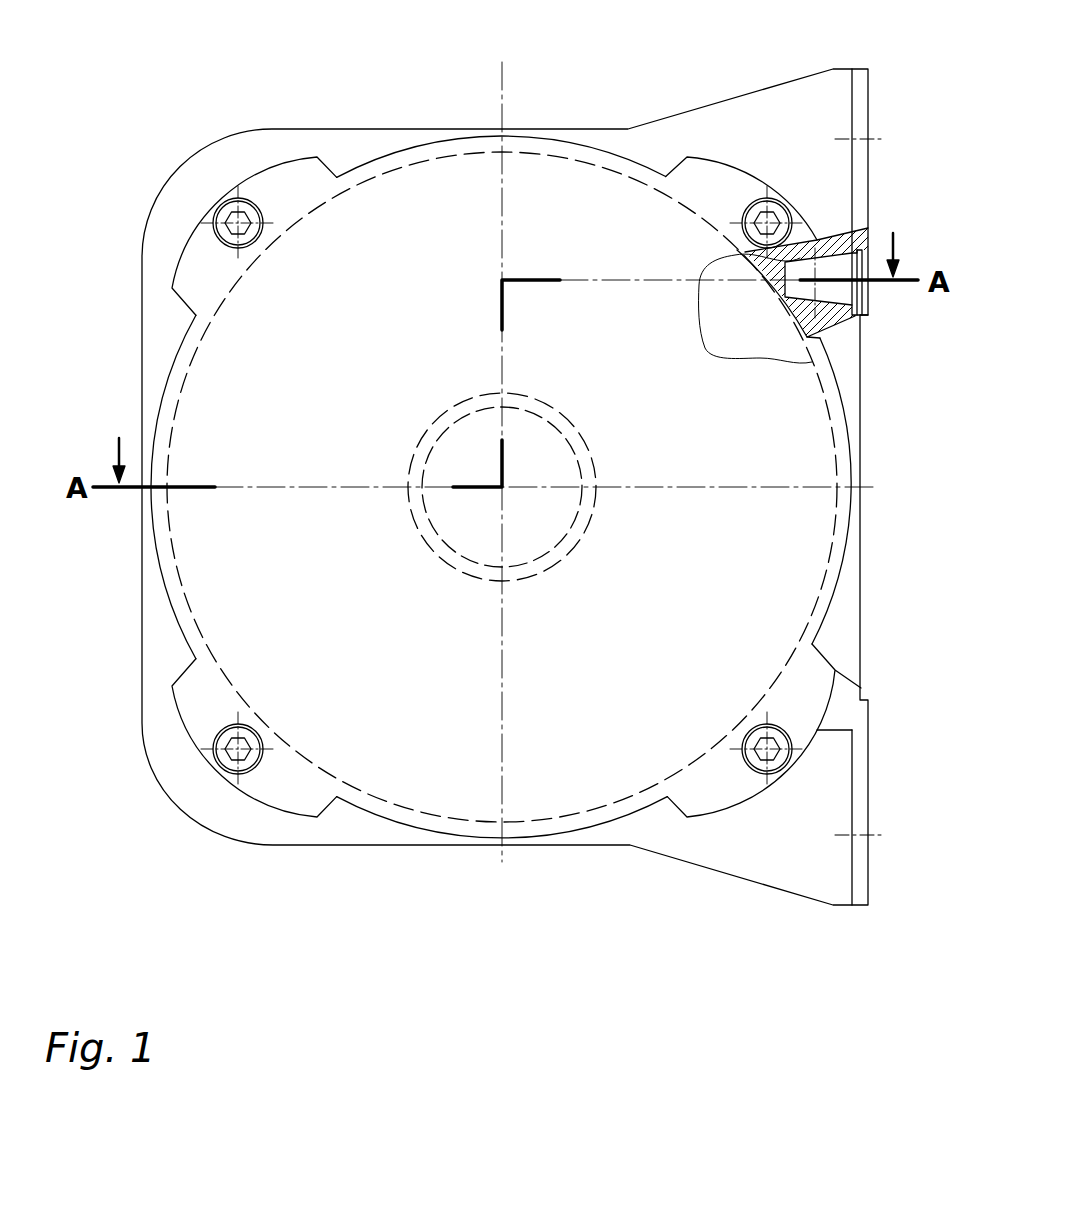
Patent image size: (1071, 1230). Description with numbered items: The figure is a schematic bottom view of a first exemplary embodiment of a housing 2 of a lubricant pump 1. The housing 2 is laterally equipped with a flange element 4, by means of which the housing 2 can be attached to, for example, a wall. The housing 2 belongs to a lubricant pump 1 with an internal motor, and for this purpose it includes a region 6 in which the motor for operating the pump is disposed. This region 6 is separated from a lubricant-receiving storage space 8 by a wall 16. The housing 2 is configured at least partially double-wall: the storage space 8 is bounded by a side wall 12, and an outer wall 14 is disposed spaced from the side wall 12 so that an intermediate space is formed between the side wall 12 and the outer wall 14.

The lubricant pump 1 is at (410, 35).
The housing 2 is at (260, 116).
The flange element 4 is at (862, 87).
The region 6 is at (480, 464).
The storage space 8 is at (355, 373).
The side wall 12 is at (481, 153).
The outer wall 14 is at (804, 212).
The wall 16 is at (433, 540).